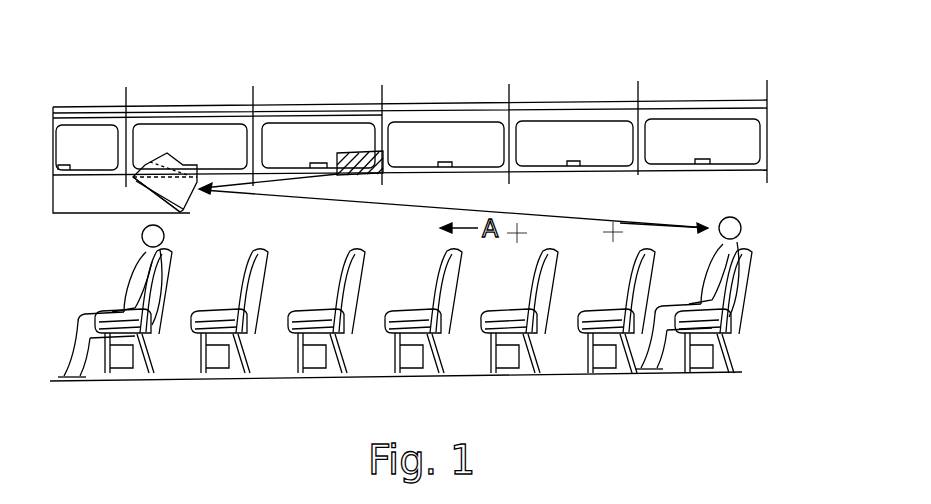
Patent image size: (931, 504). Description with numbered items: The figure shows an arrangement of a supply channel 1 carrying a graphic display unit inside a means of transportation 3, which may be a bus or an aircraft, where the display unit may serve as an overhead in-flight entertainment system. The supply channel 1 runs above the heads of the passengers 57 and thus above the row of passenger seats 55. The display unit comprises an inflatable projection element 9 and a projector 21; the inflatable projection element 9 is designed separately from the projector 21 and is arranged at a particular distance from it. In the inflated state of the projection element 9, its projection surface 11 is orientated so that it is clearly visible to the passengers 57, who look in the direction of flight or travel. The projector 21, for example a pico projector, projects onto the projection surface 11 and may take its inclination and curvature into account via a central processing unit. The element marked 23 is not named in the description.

The supply channel 1 is at (580, 68).
The means of transportation 3 is at (782, 76).
The inflatable projection element 9 is at (180, 165).
The projection surface 11 is at (203, 192).
The projector 21 is at (360, 153).
The projector housing 23 is at (142, 182).
The passenger seats 55 is at (155, 345).
The passengers 57 is at (165, 227).